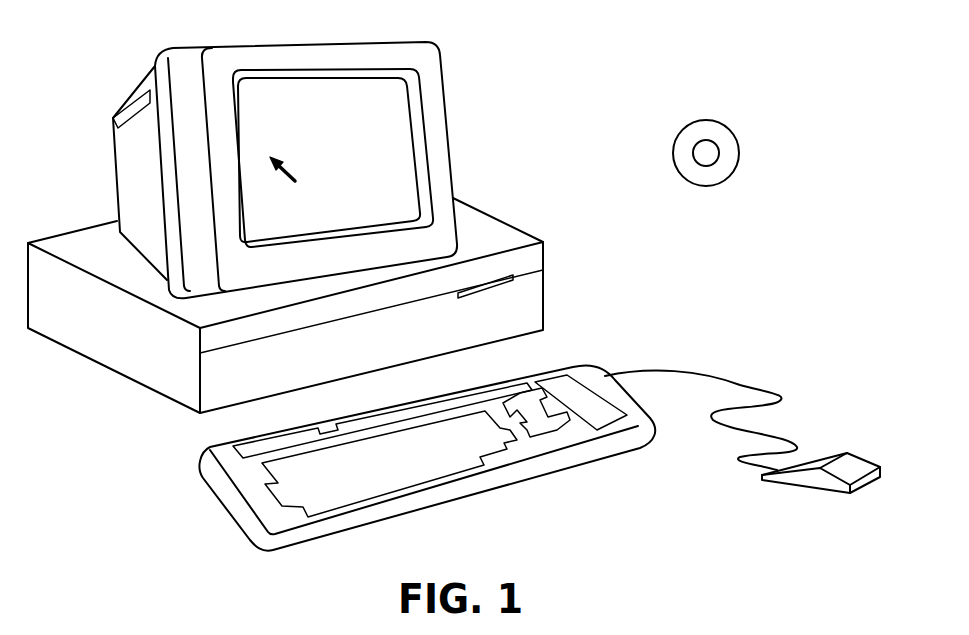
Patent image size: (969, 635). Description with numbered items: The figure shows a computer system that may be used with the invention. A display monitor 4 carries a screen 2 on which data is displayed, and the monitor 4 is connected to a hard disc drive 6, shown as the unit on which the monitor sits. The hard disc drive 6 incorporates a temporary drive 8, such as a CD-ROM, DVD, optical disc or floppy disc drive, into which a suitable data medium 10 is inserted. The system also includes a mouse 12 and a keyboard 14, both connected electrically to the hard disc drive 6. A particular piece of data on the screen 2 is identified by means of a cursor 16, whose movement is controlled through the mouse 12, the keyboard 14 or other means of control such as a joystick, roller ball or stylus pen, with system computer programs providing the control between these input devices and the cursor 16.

The screen 2 is at (400, 105).
The display monitor 4 is at (450, 177).
The hard disc drive 6 is at (117, 330).
The temporary drive 8 is at (515, 277).
The data medium 10 is at (718, 122).
The mouse 12 is at (822, 452).
The keyboard 14 is at (530, 478).
The cursor 16 is at (280, 168).